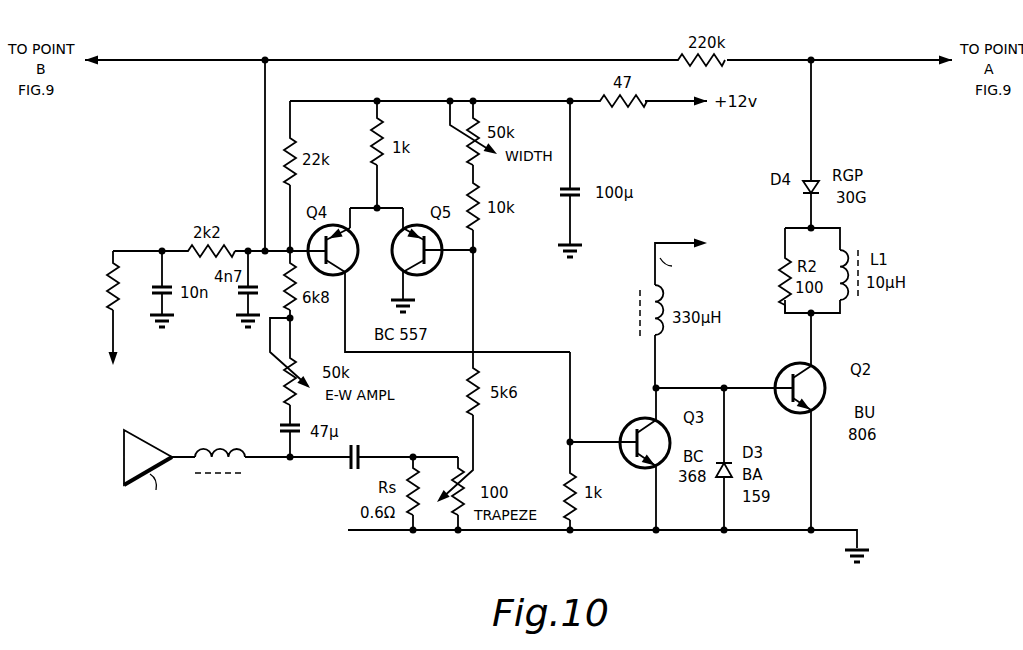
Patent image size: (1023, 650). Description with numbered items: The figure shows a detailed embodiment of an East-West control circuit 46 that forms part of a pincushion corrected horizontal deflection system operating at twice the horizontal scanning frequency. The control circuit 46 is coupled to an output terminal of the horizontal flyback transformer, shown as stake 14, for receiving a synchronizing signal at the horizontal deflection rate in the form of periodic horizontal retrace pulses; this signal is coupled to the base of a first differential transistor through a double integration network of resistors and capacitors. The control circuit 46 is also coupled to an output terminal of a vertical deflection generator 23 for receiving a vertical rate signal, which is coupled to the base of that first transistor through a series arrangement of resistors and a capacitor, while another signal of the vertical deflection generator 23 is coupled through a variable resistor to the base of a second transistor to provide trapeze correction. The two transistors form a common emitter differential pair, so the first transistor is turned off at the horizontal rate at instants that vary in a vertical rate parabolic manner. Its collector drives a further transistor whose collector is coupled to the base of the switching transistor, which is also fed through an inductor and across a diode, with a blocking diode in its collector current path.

The stake 14 is at (395, 290).
The vertical deflection generator 23 is at (288, 525).
The East-West control circuit 46 is at (582, 298).